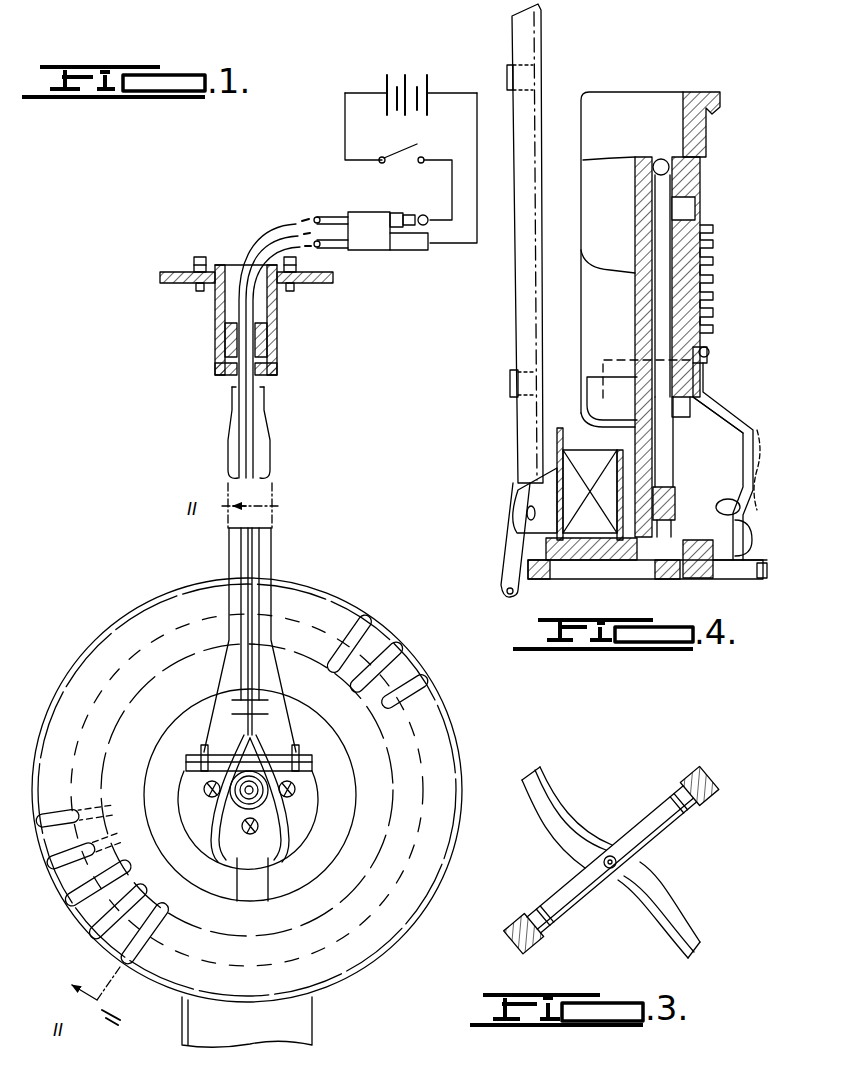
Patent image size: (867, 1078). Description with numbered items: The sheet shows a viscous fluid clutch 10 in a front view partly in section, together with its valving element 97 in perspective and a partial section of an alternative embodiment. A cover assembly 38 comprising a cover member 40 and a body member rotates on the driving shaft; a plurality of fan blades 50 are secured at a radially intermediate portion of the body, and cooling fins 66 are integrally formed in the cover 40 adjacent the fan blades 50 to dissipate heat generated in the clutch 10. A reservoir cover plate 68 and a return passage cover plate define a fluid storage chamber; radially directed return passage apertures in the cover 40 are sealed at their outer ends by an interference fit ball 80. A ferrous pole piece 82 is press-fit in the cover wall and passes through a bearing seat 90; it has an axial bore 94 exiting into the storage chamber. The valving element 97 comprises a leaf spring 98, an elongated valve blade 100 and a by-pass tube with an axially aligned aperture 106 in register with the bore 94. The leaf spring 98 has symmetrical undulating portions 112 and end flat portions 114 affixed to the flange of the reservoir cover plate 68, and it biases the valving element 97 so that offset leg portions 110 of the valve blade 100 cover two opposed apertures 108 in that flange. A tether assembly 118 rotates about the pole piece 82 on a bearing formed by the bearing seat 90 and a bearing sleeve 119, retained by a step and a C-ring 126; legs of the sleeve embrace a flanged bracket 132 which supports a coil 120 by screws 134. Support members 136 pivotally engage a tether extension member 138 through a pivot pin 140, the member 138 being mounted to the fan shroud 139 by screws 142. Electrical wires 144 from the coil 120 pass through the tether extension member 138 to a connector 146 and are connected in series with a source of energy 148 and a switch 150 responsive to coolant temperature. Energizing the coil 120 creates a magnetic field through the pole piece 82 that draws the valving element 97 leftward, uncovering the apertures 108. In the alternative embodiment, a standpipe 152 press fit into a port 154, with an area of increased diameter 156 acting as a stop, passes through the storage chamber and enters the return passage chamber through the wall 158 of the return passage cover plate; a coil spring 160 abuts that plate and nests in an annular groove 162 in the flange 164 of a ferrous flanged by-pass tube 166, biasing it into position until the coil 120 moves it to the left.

In FIG. 1, the viscous fluid clutch 10 is at (163, 518).
In FIG. 4, the viscous fluid clutch 10 is at (705, 75).
In FIG. 1, the cover assembly 38 is at (408, 643).
In FIG. 1, the cover member 40 is at (440, 827).
In FIG. 4, the cover member 40 is at (640, 90).
In FIG. 1, the floor surface 50 is at (268, 1034).
In FIG. 1, the cooling fins 66 is at (90, 927).
In FIG. 4, the reservoir cover plate 68 is at (760, 452).
In FIG. 4, the ball 80 is at (660, 158).
In FIG. 1, the pole piece 82 is at (262, 808).
In FIG. 4, the pole piece 82 is at (585, 580).
In FIG. 1, the bearing seat 90 is at (262, 836).
In FIG. 4, the axial bore 94 is at (700, 580).
In FIG. 3, the valving element 97 is at (702, 855).
In FIG. 3, the leaf spring 98 is at (668, 905).
In FIG. 4, the valve blade 100 is at (731, 461).
In FIG. 3, the valve blade 100 is at (672, 800).
In FIG. 3, the aperture 106 is at (617, 856).
In FIG. 4, the apertures 108 is at (707, 362).
In FIG. 3, the apertures 108 is at (713, 768).
In FIG. 4, the offset leg portion 110 is at (708, 350).
In FIG. 3, the offset leg portion 110 is at (688, 775).
In FIG. 3, the undulating portions 112 is at (574, 843).
In FIG. 3, the flat portion 114 is at (538, 770).
In FIG. 1, the tether assembly 118 is at (292, 668).
In FIG. 4, the tether assembly 118 is at (505, 508).
In FIG. 1, the bearing sleeve 119 is at (221, 845).
In FIG. 4, the coil 120 is at (593, 462).
In FIG. 1, the C-ring 126 is at (258, 792).
In FIG. 1, the flanged bracket 132 is at (195, 797).
In FIG. 1, the screws 134 is at (297, 789).
In FIG. 1, the support members 136 is at (203, 752).
In FIG. 1, the tether extension member 138 is at (278, 548).
In FIG. 4, the tether extension member 138 is at (525, 305).
In FIG. 1, the fan shroud 139 is at (178, 272).
In FIG. 1, the pivot pin 140 is at (303, 760).
In FIG. 1, the screws 142 is at (200, 257).
In FIG. 1, the electrical wires 144 is at (245, 458).
In FIG. 4, the electrical wires 144 is at (503, 560).
In FIG. 1, the connector 146 is at (388, 250).
In FIG. 1, the source of energy 148 is at (405, 77).
In FIG. 1, the switch 150 is at (398, 162).
In FIG. 4, the standpipe 152 is at (672, 455).
In FIG. 4, the port 154 is at (708, 382).
In FIG. 4, the area of increased diameter 156 is at (640, 410).
In FIG. 4, the wall 158 is at (680, 490).
In FIG. 4, the coil spring 160 is at (682, 510).
In FIG. 4, the annular groove 162 is at (740, 508).
In FIG. 4, the flange 164 is at (718, 580).
In FIG. 4, the flanged by-pass tube 166 is at (760, 580).